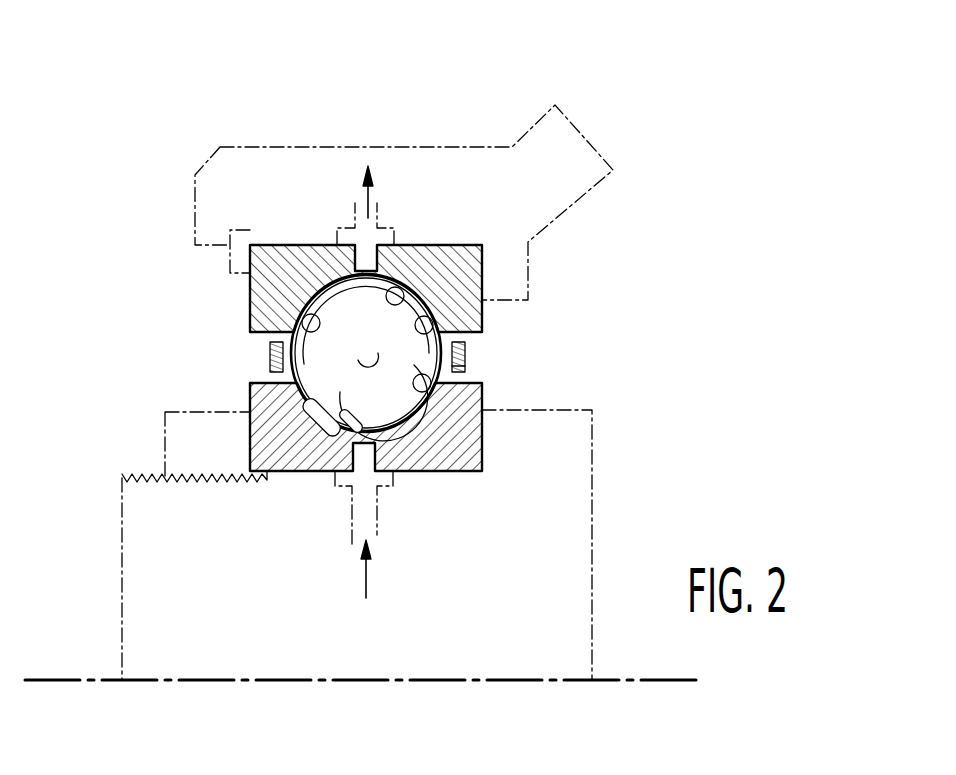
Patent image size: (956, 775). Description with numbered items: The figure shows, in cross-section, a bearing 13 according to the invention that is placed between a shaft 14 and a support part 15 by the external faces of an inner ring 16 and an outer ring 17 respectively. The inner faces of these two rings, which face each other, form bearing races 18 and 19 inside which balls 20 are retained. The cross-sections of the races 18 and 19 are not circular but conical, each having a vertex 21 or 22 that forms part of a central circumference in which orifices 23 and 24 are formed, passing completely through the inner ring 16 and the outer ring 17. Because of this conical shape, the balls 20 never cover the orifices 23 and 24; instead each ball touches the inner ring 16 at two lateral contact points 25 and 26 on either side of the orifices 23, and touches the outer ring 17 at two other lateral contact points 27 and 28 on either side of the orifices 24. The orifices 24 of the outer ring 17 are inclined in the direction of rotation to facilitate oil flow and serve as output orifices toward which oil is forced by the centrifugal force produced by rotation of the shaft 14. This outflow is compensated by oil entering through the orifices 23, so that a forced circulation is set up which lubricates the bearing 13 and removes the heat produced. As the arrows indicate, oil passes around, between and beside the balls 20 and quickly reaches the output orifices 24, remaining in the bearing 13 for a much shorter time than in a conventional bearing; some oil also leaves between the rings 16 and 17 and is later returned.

The bearing 13 is at (208, 301).
The shaft 14 is at (122, 578).
The support part 15 is at (193, 182).
The inner ring 16 is at (484, 457).
The outer ring 17 is at (484, 270).
The bearing race 18 is at (332, 437).
The bearing race 19 is at (388, 285).
The ball 20 is at (385, 348).
The vertex 21 is at (382, 438).
The vertex 22 is at (328, 268).
The orifice 23 is at (363, 460).
The output orifice 24 is at (365, 258).
The lateral contact point 25 is at (350, 431).
The lateral contact point 26 is at (467, 365).
The lateral contact point 27 is at (268, 350).
The lateral contact point 28 is at (467, 345).